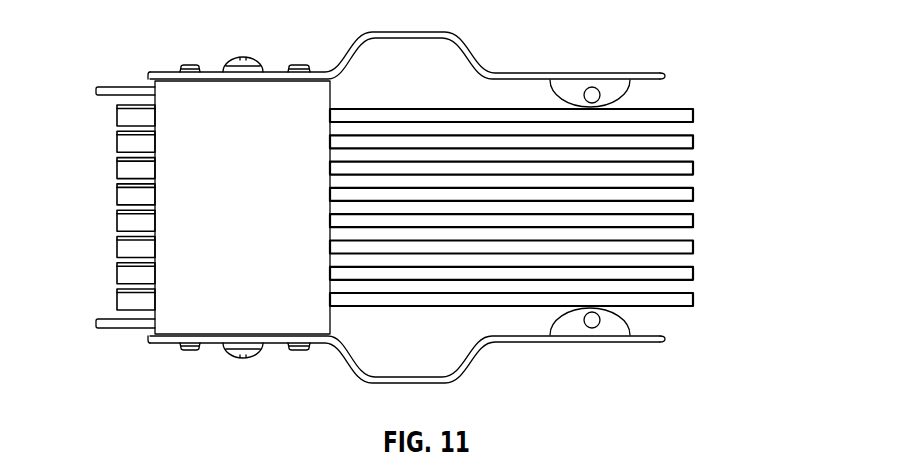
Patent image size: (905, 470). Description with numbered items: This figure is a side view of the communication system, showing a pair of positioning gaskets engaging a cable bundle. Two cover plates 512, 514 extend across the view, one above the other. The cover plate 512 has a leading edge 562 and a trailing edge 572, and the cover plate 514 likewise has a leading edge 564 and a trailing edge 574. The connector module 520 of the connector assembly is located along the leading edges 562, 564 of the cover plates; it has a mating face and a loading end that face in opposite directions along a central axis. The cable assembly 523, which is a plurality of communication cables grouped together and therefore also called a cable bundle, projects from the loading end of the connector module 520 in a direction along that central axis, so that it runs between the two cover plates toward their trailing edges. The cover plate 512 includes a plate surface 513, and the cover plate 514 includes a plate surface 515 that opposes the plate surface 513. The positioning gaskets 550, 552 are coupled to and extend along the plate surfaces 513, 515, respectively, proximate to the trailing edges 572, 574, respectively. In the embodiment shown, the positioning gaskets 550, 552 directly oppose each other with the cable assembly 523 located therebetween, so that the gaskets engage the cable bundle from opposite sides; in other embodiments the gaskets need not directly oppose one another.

The cover plate 512 is at (447, 33).
The plate surface 513 is at (413, 58).
The cover plate 514 is at (450, 381).
The plate surface 515 is at (381, 355).
The connector module 520 is at (104, 223).
The cable assembly 523 is at (703, 105).
The positioning gasket 550 is at (614, 103).
The positioning gasket 552 is at (630, 322).
The leading edge 562 is at (149, 76).
The leading edge 564 is at (148, 339).
The trailing edge 572 is at (666, 78).
The trailing edge 574 is at (666, 341).